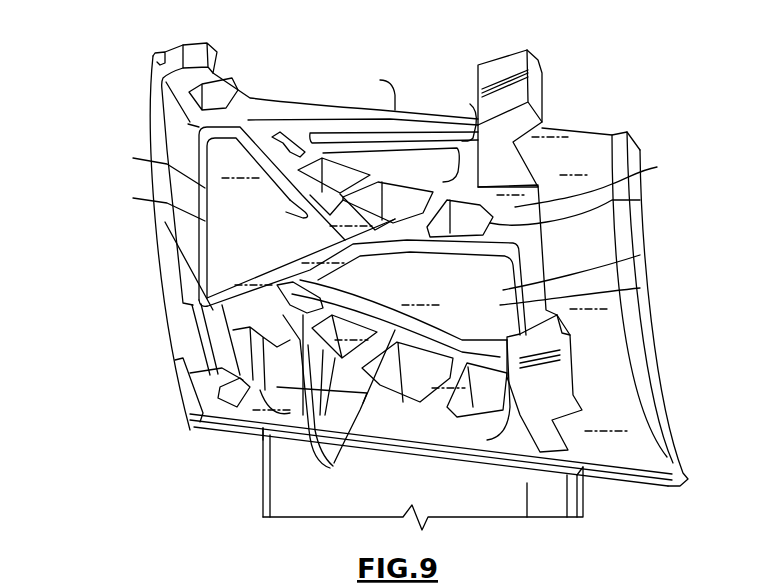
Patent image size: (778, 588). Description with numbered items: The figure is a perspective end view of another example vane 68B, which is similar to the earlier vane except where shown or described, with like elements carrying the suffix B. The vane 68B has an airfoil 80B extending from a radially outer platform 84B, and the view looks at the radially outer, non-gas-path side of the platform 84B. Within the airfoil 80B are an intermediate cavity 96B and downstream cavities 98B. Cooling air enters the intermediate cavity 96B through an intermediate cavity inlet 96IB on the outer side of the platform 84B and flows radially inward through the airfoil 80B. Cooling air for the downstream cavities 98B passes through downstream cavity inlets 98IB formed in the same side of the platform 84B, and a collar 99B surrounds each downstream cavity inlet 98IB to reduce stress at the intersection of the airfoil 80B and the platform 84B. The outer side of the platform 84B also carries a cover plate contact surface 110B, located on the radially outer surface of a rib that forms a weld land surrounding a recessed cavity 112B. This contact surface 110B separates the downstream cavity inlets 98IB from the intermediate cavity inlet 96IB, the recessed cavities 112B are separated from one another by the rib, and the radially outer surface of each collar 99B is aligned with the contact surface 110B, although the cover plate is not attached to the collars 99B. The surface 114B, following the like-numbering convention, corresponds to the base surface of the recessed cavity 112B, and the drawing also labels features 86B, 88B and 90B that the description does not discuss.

The vane 68B is at (605, 90).
The airfoil 80B is at (507, 519).
The radially outer platform 84B is at (188, 430).
The base end 86B is at (588, 504).
The base end 88B is at (262, 495).
The mounting blocks 90B is at (214, 50).
The intermediate cavity 96B is at (522, 207).
The intermediate cavity inlet 96IB is at (640, 200).
The downstream cavities 98B is at (343, 160).
The downstream cavity inlets 98IB is at (285, 210).
The collar 99B is at (401, 170).
The cover plate contact surface 110B is at (450, 270).
The recessed cavity 112B is at (502, 304).
The panel rib 114B is at (640, 255).